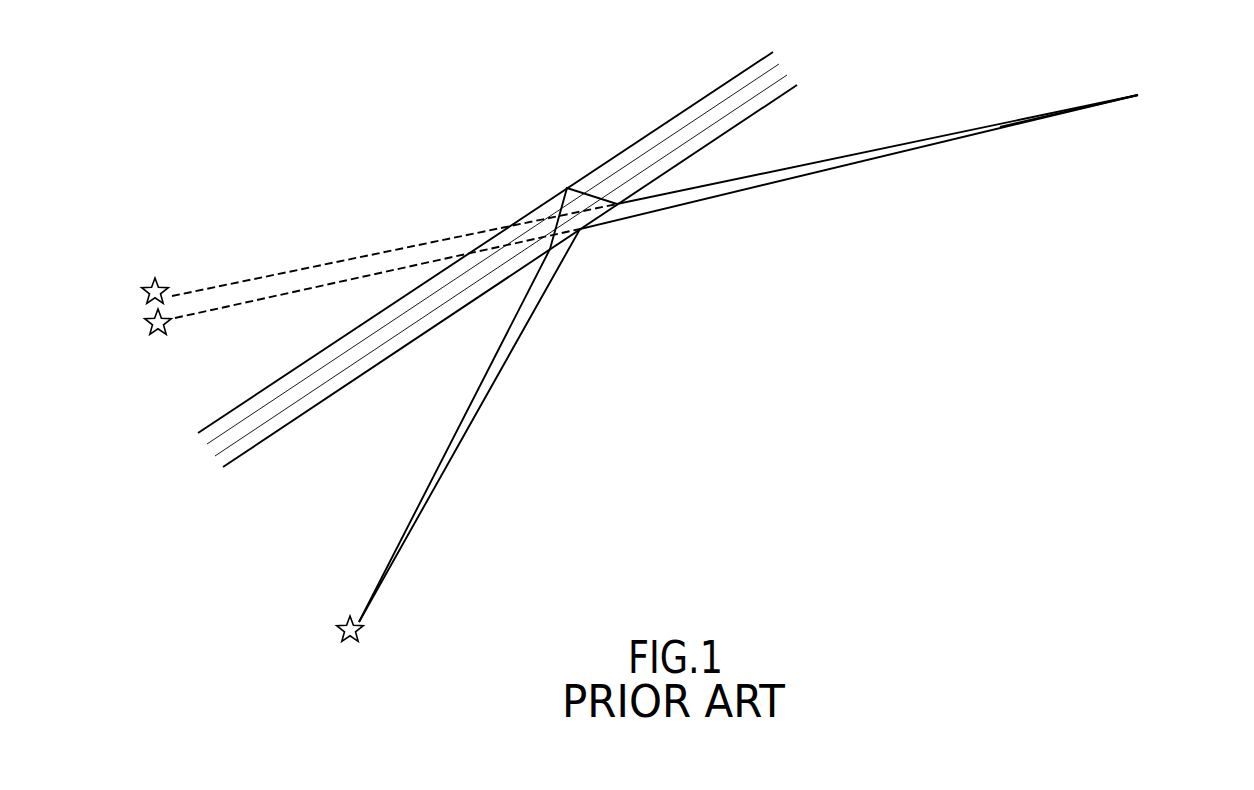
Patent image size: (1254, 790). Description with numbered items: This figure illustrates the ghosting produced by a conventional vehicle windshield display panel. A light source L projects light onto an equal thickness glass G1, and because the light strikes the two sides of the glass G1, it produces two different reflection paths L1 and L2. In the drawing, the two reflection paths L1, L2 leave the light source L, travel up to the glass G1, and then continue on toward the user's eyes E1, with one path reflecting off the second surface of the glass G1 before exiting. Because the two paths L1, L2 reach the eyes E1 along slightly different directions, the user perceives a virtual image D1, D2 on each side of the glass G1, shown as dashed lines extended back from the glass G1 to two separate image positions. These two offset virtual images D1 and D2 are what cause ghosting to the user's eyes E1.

The equal thickness glass G1 is at (780, 72).
The user's eyes E1 is at (1138, 95).
The light source L is at (364, 633).
The first reflection path L1 is at (482, 403).
The second reflection path L2 is at (469, 410).
The first virtual image D1 is at (172, 321).
The second virtual image D2 is at (156, 279).